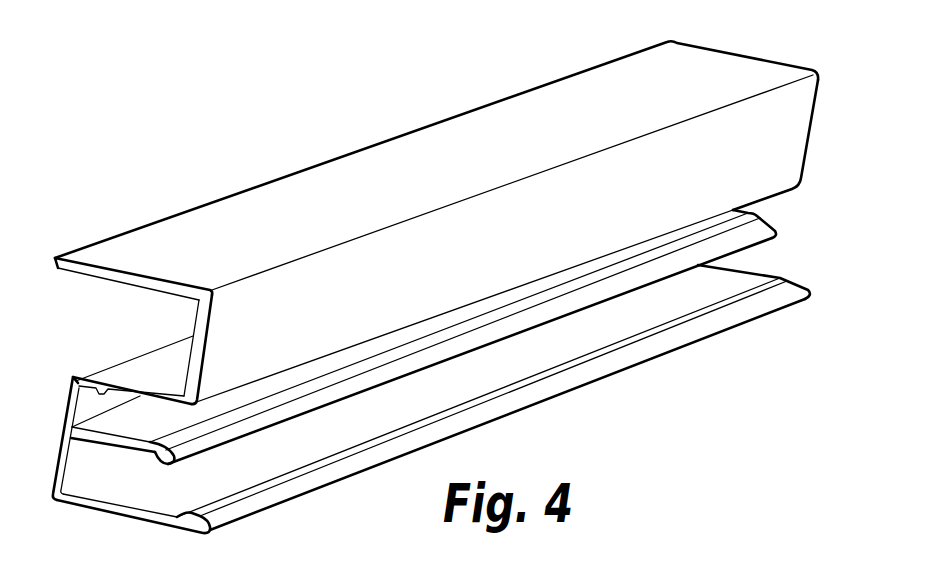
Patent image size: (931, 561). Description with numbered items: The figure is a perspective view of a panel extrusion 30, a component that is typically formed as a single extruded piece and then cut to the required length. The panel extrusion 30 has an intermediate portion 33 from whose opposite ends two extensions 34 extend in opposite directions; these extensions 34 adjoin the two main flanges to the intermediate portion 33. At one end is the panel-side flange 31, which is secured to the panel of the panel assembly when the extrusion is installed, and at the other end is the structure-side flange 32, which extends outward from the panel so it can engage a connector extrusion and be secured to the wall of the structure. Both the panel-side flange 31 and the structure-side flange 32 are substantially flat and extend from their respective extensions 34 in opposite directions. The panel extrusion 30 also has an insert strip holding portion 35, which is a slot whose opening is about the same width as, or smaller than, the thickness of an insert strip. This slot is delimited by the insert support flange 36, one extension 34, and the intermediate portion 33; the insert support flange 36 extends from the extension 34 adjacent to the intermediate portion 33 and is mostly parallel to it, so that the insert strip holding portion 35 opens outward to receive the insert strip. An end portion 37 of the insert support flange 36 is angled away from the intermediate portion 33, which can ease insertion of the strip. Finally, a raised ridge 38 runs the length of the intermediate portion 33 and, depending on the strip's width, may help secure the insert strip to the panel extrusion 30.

The panel extrusion 30 is at (474, 100).
The panel-side flange 31 is at (148, 232).
The structure-side flange 32 is at (140, 493).
The intermediate portion 33 is at (140, 358).
The extensions 34 is at (201, 313).
The insert strip holding portion 35 is at (94, 406).
The insert support flange 36 is at (122, 423).
The end portion 37 is at (237, 427).
The raised ridge 38 is at (100, 390).